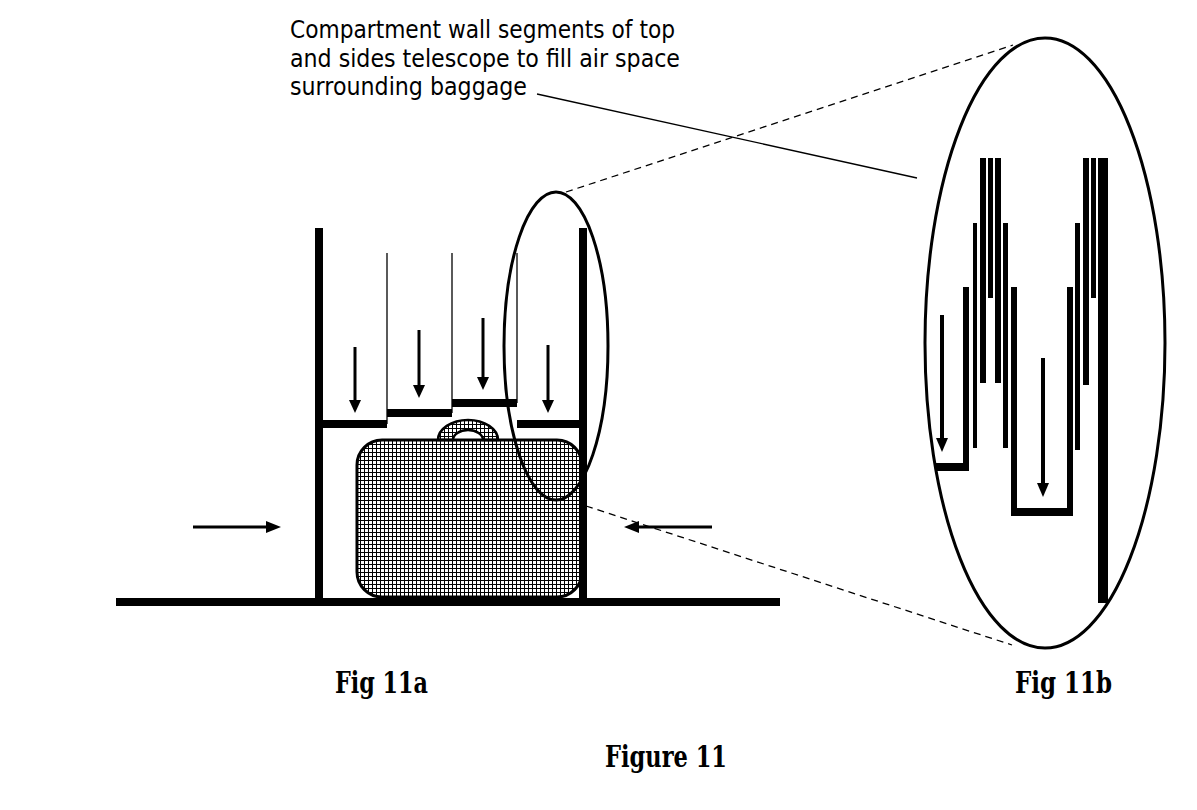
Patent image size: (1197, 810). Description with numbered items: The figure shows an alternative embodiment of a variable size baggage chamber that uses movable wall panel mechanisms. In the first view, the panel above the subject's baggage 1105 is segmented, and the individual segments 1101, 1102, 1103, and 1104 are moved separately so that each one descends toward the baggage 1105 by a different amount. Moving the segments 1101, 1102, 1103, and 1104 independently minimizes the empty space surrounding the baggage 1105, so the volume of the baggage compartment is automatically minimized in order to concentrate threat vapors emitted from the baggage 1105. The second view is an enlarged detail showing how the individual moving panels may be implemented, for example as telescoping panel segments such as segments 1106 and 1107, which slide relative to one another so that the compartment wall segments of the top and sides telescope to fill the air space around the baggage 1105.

In FIG. 11A, the segment 1101 is at (353, 330).
In FIG. 11A, the segment 1102 is at (418, 310).
In FIG. 11A, the segment 1103 is at (483, 300).
In FIG. 11A, the segment 1104 is at (548, 320).
In FIG. 11A, the subject's baggage 1105 is at (430, 545).
In FIG. 11B, the telescoping panel segment 1106 is at (948, 483).
In FIG. 11B, the telescoping panel segment 1107 is at (1045, 528).